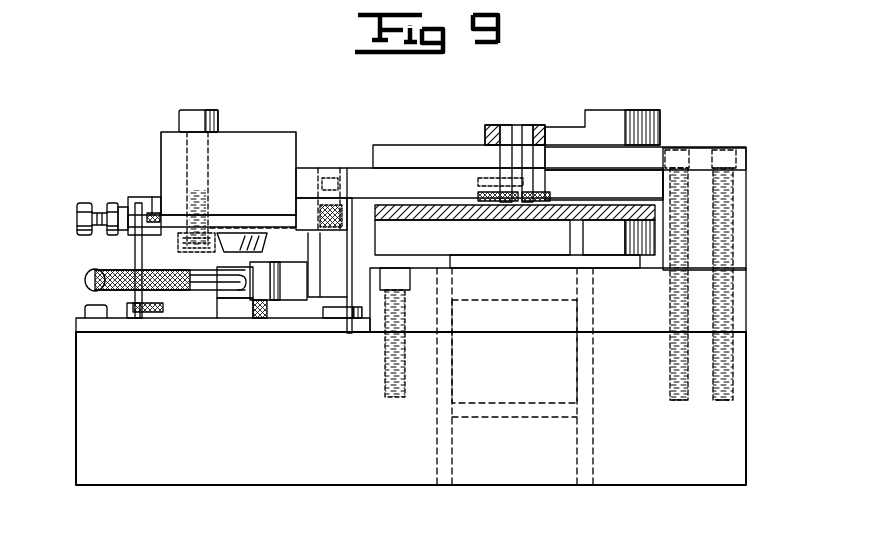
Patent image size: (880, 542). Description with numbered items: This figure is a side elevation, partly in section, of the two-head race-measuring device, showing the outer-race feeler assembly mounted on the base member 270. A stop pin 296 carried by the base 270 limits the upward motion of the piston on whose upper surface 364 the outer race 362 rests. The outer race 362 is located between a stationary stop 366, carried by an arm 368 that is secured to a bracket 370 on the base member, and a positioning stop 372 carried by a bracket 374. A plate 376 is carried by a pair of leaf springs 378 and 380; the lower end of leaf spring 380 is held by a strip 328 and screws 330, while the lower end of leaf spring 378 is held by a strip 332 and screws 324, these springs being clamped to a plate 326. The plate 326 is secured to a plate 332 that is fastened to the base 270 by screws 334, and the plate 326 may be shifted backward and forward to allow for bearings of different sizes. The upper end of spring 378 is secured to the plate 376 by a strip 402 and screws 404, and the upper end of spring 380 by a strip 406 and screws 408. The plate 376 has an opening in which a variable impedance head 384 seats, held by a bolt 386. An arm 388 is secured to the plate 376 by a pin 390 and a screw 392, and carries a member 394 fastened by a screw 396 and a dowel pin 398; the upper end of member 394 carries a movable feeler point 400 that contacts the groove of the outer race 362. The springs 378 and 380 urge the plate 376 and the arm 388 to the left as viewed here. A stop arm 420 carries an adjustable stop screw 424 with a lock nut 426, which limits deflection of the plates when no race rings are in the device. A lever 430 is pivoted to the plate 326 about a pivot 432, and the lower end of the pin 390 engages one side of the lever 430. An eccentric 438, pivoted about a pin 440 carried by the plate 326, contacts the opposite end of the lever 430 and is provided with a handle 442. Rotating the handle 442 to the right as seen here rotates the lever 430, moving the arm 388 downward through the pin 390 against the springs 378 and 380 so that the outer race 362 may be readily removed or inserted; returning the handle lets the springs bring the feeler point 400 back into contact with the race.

The base member 270 is at (748, 445).
The stop pin 296 is at (532, 380).
The screws 324 is at (128, 318).
The plate 326 is at (245, 318).
The strip 328 is at (372, 292).
The screws 330 is at (366, 310).
The plate 332 is at (118, 308).
The screws 334 is at (100, 322).
The outer race 362 is at (490, 125).
The upper surface 364 is at (395, 145).
The stationary stop 366 is at (525, 125).
The arm 368 is at (600, 185).
The bracket 370 is at (745, 168).
The positioning stop 372 is at (595, 135).
The bracket 374 is at (660, 120).
The plate 376 is at (152, 195).
The leaf spring 378 is at (135, 252).
The leaf spring 380 is at (352, 262).
The variable impedance head 384 is at (278, 140).
The bolt 386 is at (216, 110).
The arm 388 is at (410, 168).
The pin 390 is at (323, 280).
The screw 392 is at (338, 162).
The member 394 is at (495, 165).
The screw 396 is at (480, 195).
The dowel pin 398 is at (478, 180).
The movable feeler point 400 is at (508, 125).
The strip 402 is at (138, 197).
The screws 404 is at (182, 251).
The strip 406 is at (350, 235).
The screws 408 is at (372, 218).
The stop arm 420 is at (124, 208).
The adjustable stop screw 424 is at (80, 210).
The lock nut 426 is at (112, 205).
The lever 430 is at (284, 300).
The pivot 432 is at (318, 252).
The eccentric 438 is at (285, 318).
The pin 440 is at (215, 233).
The handle 442 is at (88, 284).